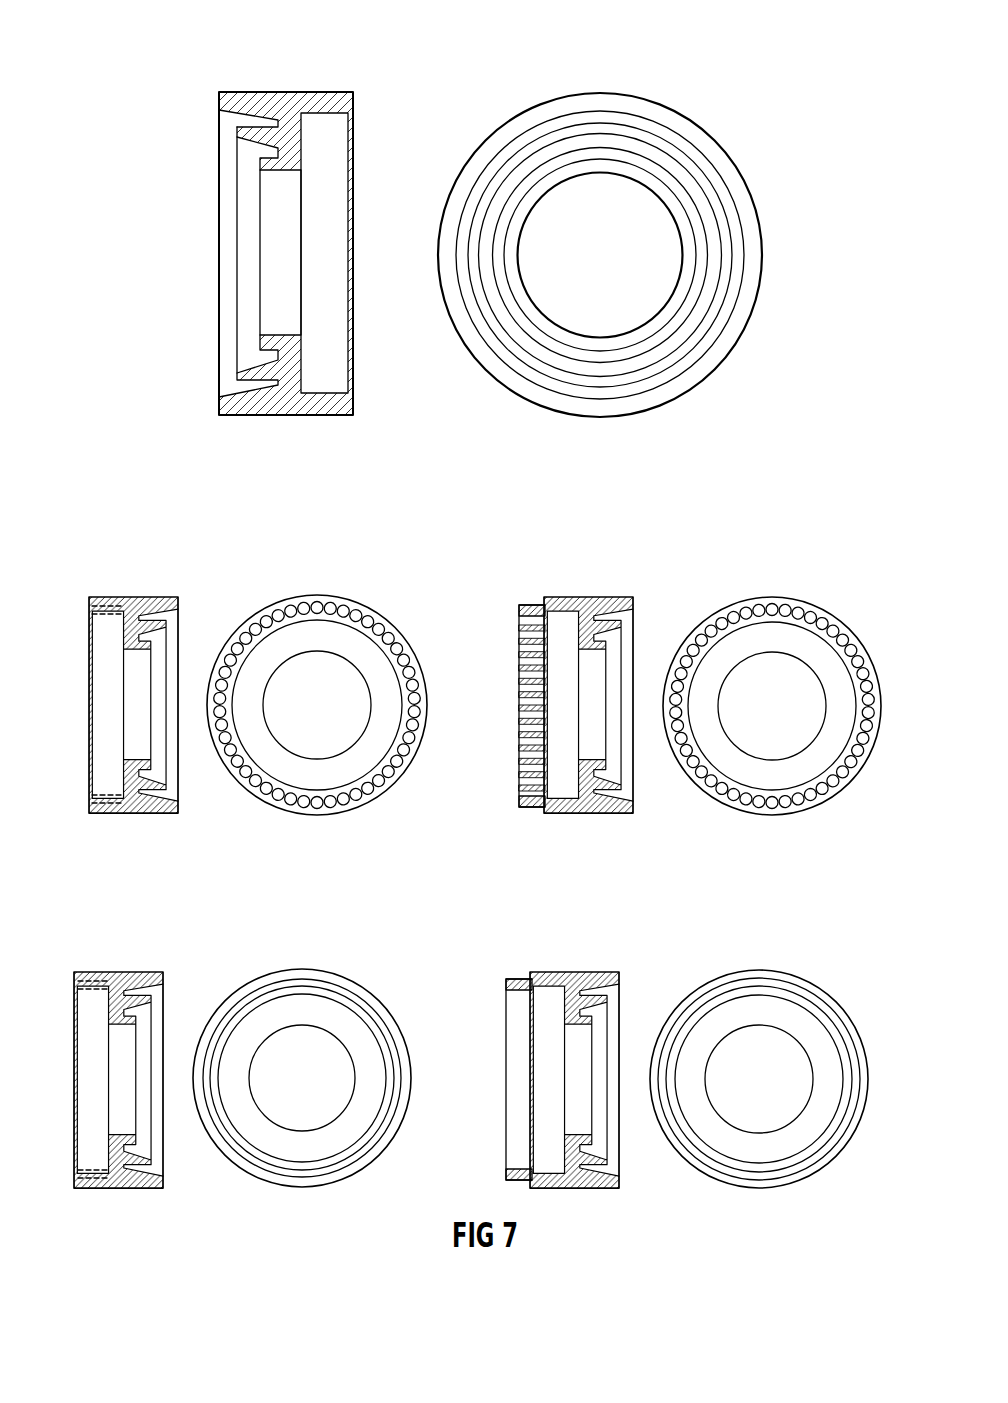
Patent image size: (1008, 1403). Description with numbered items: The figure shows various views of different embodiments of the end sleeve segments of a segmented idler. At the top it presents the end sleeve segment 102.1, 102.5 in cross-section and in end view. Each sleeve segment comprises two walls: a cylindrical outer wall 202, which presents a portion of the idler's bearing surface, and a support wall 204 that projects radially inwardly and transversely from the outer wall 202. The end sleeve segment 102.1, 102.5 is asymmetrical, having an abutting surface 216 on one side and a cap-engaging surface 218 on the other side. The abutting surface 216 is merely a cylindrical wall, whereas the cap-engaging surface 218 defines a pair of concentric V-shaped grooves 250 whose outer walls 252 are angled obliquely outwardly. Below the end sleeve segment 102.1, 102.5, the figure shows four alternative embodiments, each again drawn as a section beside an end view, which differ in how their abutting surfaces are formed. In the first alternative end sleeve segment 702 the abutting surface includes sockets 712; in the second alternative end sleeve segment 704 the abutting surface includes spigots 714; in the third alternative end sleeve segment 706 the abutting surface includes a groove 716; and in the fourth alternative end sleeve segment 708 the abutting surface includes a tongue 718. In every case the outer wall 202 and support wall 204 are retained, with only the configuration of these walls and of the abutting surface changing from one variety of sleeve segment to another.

The cylindrical outer wall 202 is at (272, 92).
The outer walls of the V-shaped grooves 252 is at (260, 112).
The abutting surface 216 is at (355, 98).
The cap-engaging surface 218 is at (219, 110).
The concentric V-shaped grooves 250 is at (258, 150).
The support wall 204 is at (293, 167).
The end sleeve segment 102.1 is at (660, 246).
The end sleeve segment 102.5 is at (739, 152).
The sockets 712 is at (88, 606).
The alternative end sleeve segment 702 is at (391, 612).
The spigots 714 is at (530, 606).
The alternative end sleeve segment 704 is at (819, 596).
The groove 716 is at (73, 981).
The alternative end sleeve segment 706 is at (378, 987).
The tongue 718 is at (515, 981).
The alternative end sleeve segment 708 is at (803, 971).